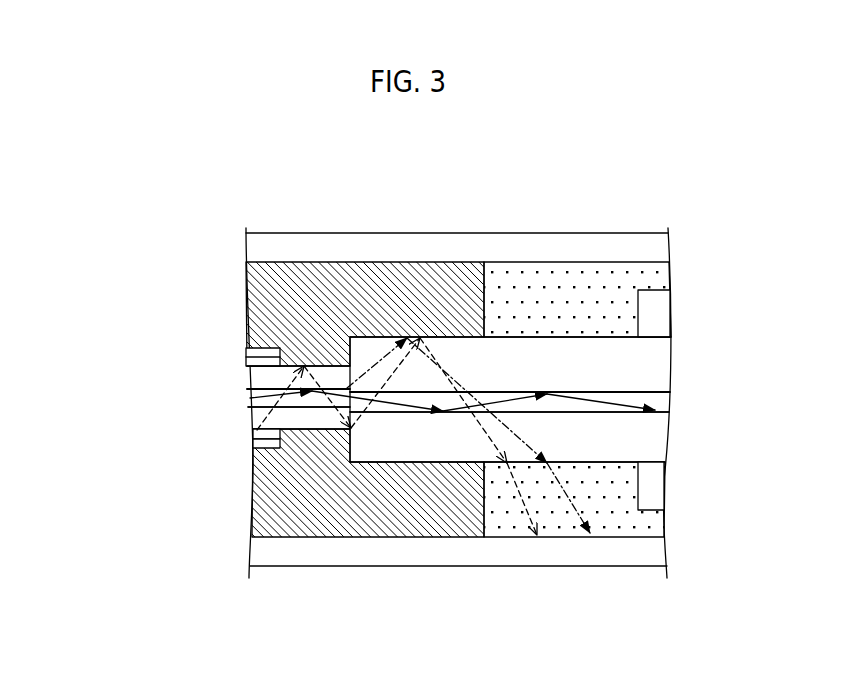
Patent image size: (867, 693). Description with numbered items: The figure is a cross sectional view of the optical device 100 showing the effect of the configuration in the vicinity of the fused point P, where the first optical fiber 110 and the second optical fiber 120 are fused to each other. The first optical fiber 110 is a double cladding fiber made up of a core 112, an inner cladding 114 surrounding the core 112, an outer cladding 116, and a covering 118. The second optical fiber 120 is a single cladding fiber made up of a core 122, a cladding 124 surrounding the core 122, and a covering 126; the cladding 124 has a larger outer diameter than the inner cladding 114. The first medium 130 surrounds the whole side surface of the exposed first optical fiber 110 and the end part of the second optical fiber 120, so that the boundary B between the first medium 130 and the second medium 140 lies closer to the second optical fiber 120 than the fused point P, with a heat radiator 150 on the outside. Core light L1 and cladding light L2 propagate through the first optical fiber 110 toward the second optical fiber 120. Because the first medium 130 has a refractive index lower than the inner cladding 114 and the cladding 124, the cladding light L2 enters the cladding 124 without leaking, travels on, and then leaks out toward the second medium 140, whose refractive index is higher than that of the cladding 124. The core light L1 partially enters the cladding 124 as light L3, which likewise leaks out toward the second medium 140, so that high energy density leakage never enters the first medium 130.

The optical device 100 is at (744, 189).
The first optical fiber 110 is at (241, 415).
The core 112 is at (262, 393).
The inner cladding 114 is at (262, 417).
The outer cladding 116 is at (254, 434).
The covering 118 is at (231, 460).
The second optical fiber 120 is at (563, 437).
The core 122 is at (658, 402).
The cladding 124 is at (658, 442).
The covering 126 is at (603, 499).
The first medium 130 is at (255, 279).
The second medium 140 is at (665, 275).
The heat radiator 150 is at (560, 247).
The boundary B is at (484, 262).
The fused point P is at (349, 337).
The core light L1 is at (30, 534).
The cladding light L2 is at (30, 587).
The light L3 is at (30, 640).